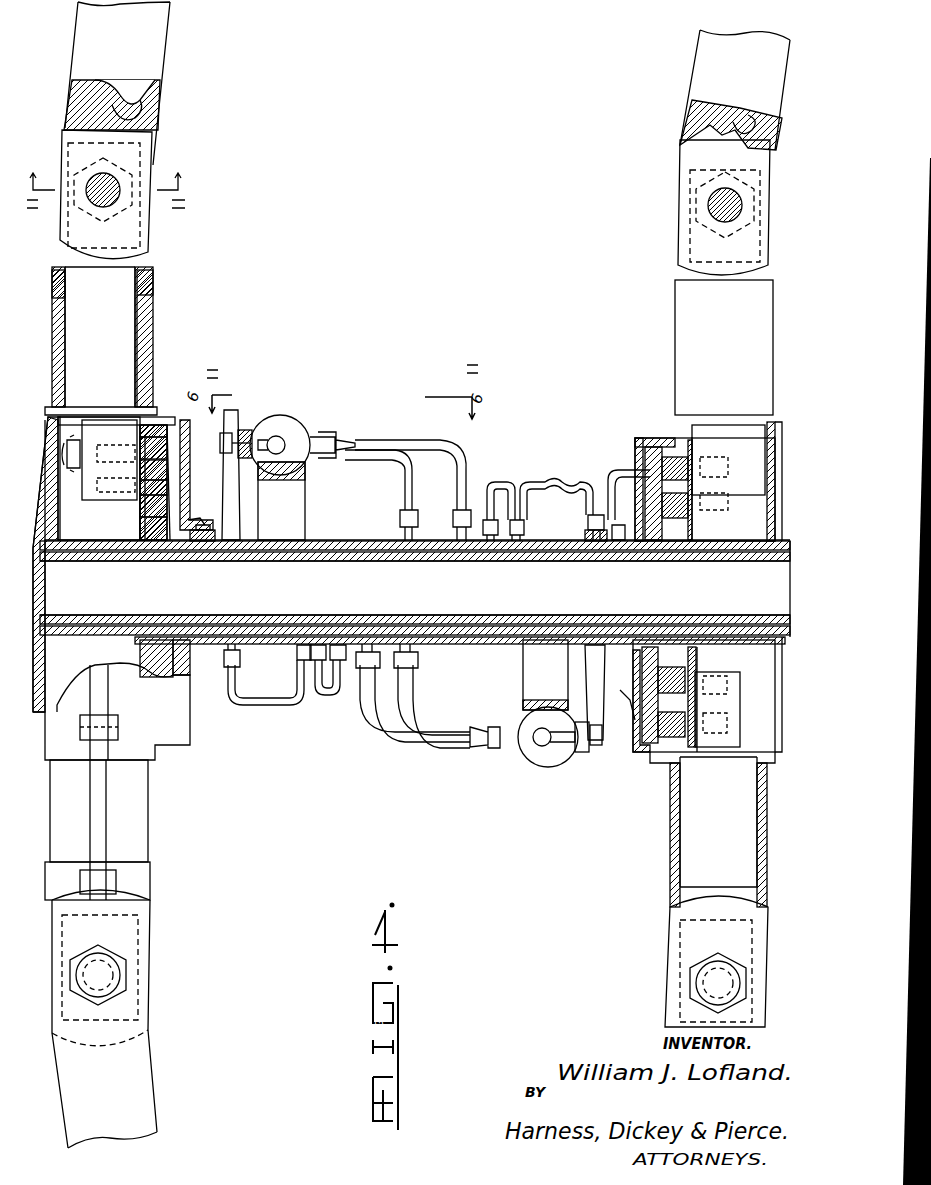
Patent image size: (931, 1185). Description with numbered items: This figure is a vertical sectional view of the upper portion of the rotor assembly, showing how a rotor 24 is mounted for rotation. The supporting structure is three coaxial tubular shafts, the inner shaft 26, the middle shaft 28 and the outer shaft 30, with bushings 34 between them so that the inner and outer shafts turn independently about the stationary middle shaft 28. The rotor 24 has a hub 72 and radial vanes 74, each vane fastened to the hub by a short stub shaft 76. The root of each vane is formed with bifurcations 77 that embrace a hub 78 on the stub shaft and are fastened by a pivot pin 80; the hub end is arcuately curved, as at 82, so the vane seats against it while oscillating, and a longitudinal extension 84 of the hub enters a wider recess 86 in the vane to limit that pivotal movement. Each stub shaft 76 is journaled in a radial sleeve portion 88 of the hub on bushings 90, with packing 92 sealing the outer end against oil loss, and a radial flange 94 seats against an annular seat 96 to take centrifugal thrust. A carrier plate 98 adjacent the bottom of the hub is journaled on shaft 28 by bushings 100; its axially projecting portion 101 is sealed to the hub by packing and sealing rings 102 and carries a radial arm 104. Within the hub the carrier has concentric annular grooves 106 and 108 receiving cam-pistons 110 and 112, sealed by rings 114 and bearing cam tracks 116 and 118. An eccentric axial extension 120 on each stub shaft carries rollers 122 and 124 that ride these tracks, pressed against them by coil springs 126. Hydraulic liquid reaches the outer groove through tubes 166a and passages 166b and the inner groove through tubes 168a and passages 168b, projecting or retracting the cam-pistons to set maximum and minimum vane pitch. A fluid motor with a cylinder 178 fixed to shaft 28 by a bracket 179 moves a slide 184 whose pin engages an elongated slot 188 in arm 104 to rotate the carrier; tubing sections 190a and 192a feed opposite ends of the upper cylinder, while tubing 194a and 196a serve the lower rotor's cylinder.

The rotor 24 is at (640, 432).
The inner tubular shaft 26 is at (520, 561).
The middle tubular shaft 28 is at (348, 541).
The outer tubular shaft 30 is at (700, 540).
The bushing 34 is at (182, 552).
The hub 72 is at (40, 470).
The vane 74 is at (75, 62).
The stub shaft 76 is at (65, 345).
The bifurcation 77 is at (55, 255).
The hub 78 is at (70, 225).
The pivot pin 80 is at (98, 195).
The arcuately curved end 82 is at (145, 118).
The longitudinal extension 84 is at (85, 110).
The recess 86 is at (128, 95).
The radial sleeve portion 88 is at (153, 328).
The bushing 90 is at (153, 313).
The packing 92 is at (153, 283).
The radial flange 94 is at (52, 368).
The annular seat 96 is at (182, 420).
The carrier plate 98 is at (160, 677).
The bushing 100 is at (210, 545).
The axially projecting portion 101 is at (205, 525).
The packing and sealing ring 102 is at (198, 515).
The radial arm 104 is at (230, 412).
The inner annular groove 106 is at (158, 520).
The outer annular groove 108 is at (150, 475).
The cam-piston 110 is at (152, 522).
The cam-piston 112 is at (140, 485).
The ring 114 is at (170, 440).
The cam track 116 is at (140, 480).
The cam track 118 is at (145, 428).
The axial extension 120 is at (95, 468).
The roller 122 is at (110, 488).
The roller 124 is at (140, 440).
The coil spring 126 is at (66, 455).
The tube 166a is at (558, 480).
The passage 166b is at (645, 440).
The tube 168a is at (503, 480).
The passage 168b is at (640, 485).
The cylinder 178 is at (283, 420).
The bracket 179 is at (262, 490).
The slide 184 is at (245, 430).
The elongated slot 188 is at (220, 440).
The tubing section 190a is at (430, 442).
The tubing section 192a is at (400, 460).
The tubing length 194a is at (385, 745).
The tubing length 196a is at (447, 748).